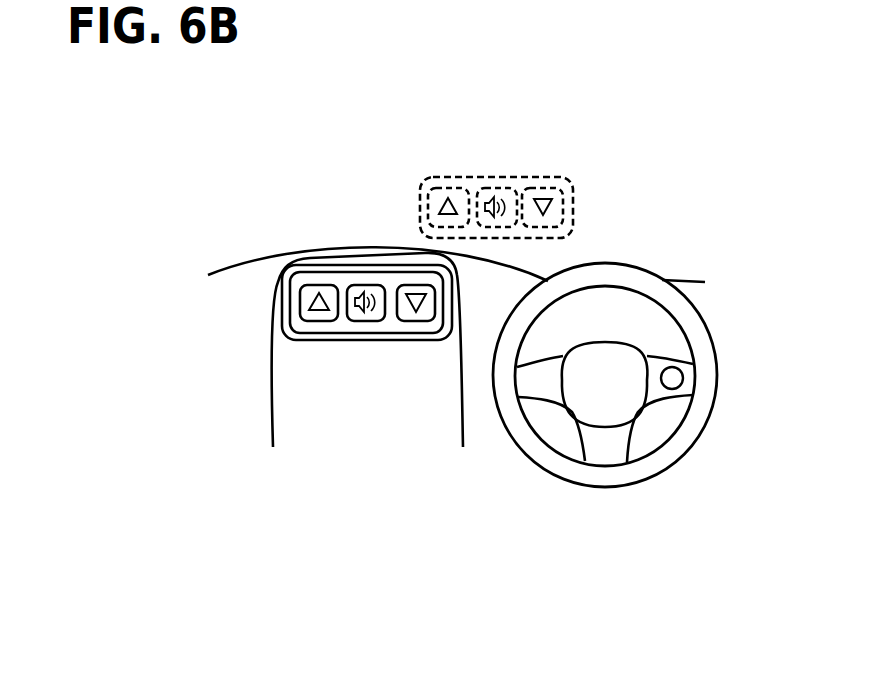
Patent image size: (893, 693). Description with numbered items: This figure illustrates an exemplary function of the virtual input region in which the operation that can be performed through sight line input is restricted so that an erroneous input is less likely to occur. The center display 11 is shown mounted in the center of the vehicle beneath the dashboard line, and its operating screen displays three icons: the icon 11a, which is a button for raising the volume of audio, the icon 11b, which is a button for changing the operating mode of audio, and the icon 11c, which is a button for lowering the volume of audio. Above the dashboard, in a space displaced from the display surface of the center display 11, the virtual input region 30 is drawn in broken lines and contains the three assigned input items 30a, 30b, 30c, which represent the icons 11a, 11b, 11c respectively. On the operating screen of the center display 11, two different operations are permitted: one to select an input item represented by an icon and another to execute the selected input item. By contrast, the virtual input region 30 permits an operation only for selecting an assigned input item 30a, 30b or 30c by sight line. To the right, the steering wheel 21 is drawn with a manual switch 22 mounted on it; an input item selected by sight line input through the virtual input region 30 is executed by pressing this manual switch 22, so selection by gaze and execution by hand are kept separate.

The center display 11 is at (307, 280).
The icon 11a is at (318, 313).
The icon 11b is at (367, 313).
The icon 11c is at (416, 315).
The steering wheel 21 is at (522, 435).
The manual switch 22 is at (672, 387).
The virtual input region 30 is at (573, 215).
The input item 30a is at (453, 188).
The input item 30b is at (498, 188).
The input item 30c is at (545, 188).